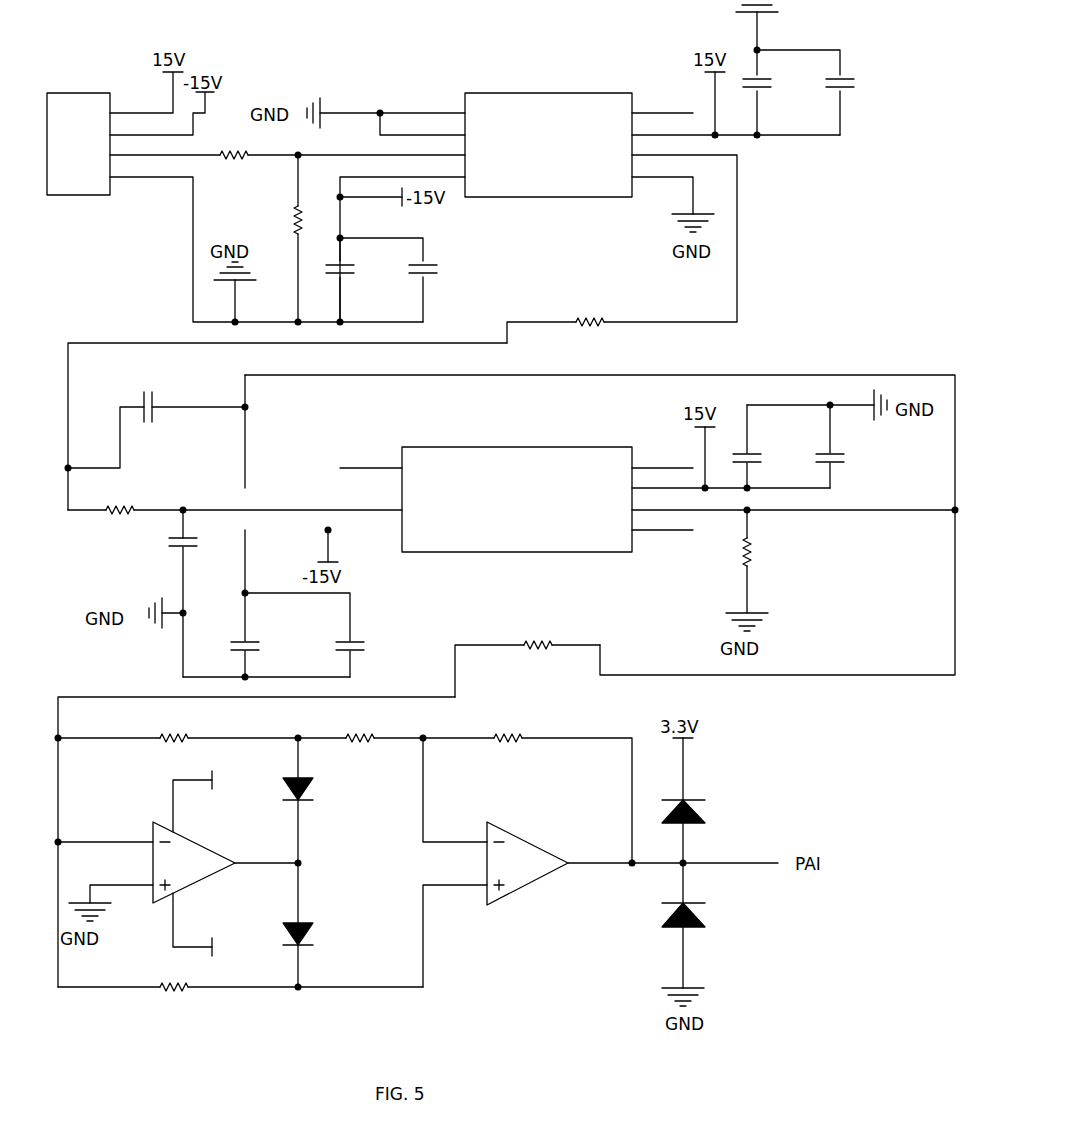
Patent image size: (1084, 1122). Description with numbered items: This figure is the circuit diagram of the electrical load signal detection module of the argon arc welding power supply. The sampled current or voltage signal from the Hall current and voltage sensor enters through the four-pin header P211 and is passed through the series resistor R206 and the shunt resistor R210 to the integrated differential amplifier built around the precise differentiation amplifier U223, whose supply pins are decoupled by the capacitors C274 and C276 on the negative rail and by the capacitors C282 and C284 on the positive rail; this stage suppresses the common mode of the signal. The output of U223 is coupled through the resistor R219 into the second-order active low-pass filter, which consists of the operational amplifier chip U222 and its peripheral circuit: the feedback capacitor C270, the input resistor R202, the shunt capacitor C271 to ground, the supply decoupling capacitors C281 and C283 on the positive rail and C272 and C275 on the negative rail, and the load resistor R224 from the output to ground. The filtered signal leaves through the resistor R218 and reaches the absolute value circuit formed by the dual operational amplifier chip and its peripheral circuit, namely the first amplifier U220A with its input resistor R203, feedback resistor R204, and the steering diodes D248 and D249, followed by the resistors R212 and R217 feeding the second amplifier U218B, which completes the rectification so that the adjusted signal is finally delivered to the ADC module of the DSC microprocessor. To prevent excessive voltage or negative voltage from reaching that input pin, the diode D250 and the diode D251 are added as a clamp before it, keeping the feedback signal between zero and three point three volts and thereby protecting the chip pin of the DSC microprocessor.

The 4-pin header connector P211 is at (82, 145).
The resistor R206 is at (287, 145).
The resistor R210 is at (270, 238).
The AD629 difference amplifier U223 is at (545, 144).
The capacitor C274 is at (357, 280).
The capacitor C276 is at (407, 280).
The capacitor C282 is at (775, 73).
The capacitor C284 is at (823, 92).
The resistor R219 is at (622, 249).
The capacitor C270 is at (156, 417).
The resistor R202 is at (235, 496).
The capacitor C271 is at (152, 593).
The OP177 operational amplifier U222 is at (513, 502).
The capacitor C281 is at (764, 446).
The capacitor C283 is at (813, 446).
The resistor R224 is at (772, 561).
The capacitor C272 is at (270, 635).
The capacitor C275 is at (329, 635).
The resistor R218 is at (527, 658).
The resistor R203 is at (178, 726).
The resistor R212 is at (360, 726).
The resistor R217 is at (527, 787).
The LF353 operational amplifier U220A is at (178, 865).
The 1N4148 diode D248 is at (334, 799).
The 1N4148 diode D249 is at (334, 940).
The resistor R204 is at (240, 1000).
The LF353 operational amplifier U218B is at (600, 862).
The diode D250 is at (719, 813).
The diode D251 is at (719, 917).